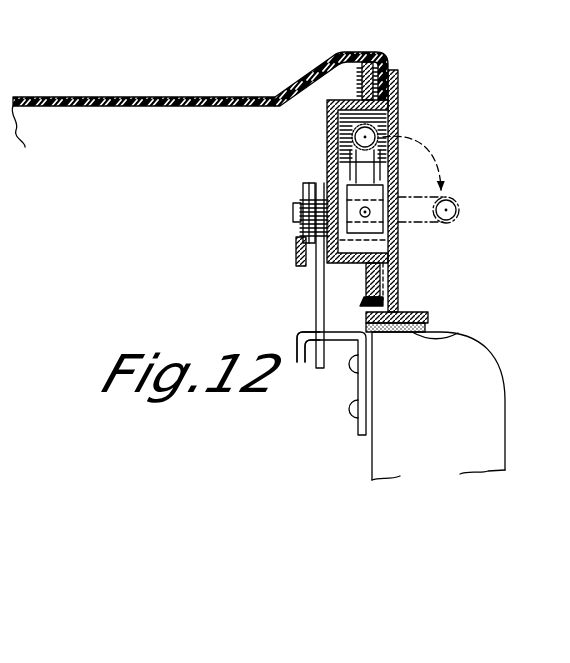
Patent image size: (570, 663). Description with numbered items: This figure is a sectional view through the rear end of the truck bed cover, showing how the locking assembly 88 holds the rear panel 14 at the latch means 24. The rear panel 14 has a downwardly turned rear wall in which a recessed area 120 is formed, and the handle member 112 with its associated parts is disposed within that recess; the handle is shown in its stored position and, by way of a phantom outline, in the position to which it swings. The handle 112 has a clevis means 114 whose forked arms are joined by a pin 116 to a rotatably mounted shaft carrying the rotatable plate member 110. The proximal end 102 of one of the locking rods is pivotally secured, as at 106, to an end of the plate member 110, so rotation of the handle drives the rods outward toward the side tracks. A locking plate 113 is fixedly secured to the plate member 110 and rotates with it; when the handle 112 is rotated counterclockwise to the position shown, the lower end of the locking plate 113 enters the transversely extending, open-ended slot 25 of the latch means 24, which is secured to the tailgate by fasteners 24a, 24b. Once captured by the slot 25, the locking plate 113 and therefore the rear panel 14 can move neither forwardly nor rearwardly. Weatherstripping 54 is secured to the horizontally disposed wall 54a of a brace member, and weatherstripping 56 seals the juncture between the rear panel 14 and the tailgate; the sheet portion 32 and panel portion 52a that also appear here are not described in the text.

The rear panel 14 is at (100, 97).
The bent sheet portion 32 is at (322, 72).
The locking assembly 88 is at (402, 81).
The handle member 112 is at (378, 130).
The clevis means 114 is at (350, 156).
The pin 116 is at (362, 217).
The rotatable plate member 110 is at (305, 185).
The pivotal securement 106 is at (293, 212).
The proximal end of rod 102 is at (297, 245).
The locking plate 113 is at (314, 307).
The recessed area 120 is at (380, 250).
The horizontally disposed wall of forward brace member 54a is at (432, 315).
The weatherstripping 56 is at (393, 332).
The weatherstripping 54 is at (458, 337).
The door panel 52a is at (495, 395).
The latch means 24 is at (362, 385).
The slot 25 is at (312, 360).
The fastener 24a is at (352, 373).
The fastener 24b is at (355, 420).